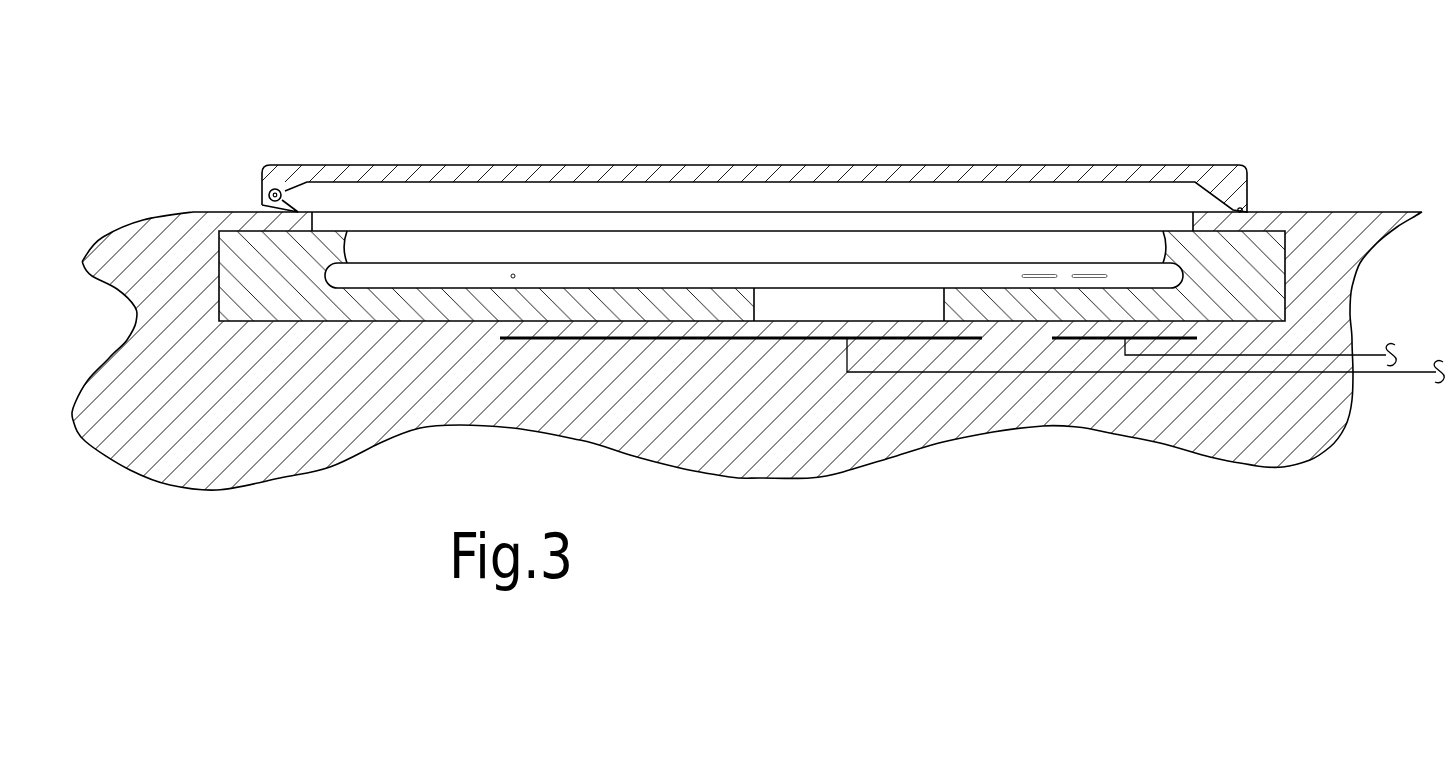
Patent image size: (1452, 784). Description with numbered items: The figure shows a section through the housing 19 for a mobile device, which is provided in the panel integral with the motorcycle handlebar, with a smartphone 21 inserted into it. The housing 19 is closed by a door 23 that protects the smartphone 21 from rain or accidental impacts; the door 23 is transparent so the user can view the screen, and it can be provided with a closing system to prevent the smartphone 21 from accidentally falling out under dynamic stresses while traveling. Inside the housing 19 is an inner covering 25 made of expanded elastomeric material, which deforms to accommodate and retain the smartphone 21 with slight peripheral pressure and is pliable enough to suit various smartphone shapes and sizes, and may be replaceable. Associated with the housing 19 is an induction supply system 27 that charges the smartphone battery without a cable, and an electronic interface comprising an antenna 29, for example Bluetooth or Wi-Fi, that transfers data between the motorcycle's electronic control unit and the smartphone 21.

The housing 19 is at (419, 252).
The smartphone 21 is at (682, 272).
The door 23 is at (1048, 175).
The inner covering 25 is at (1247, 274).
The induction supply system 27 is at (813, 338).
The antenna 29 is at (1110, 338).